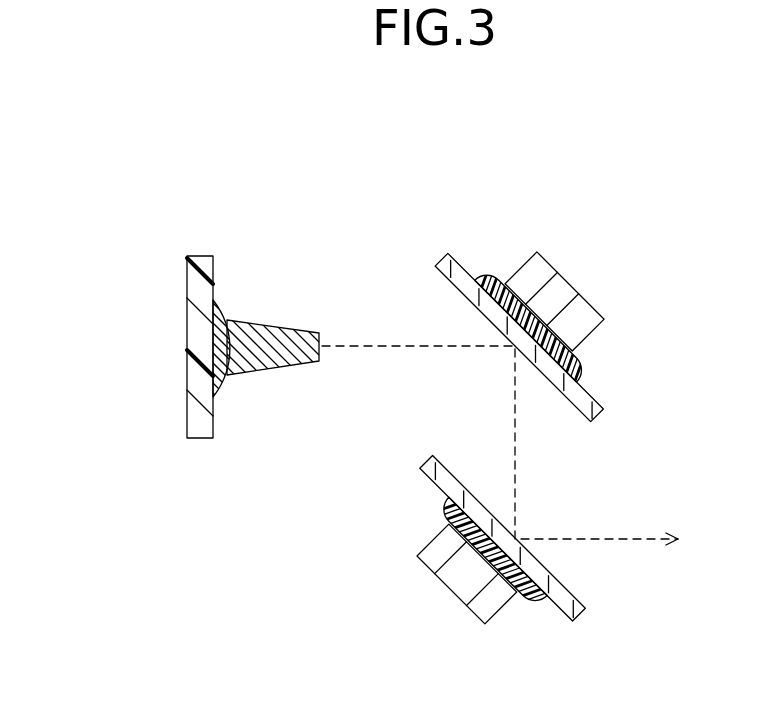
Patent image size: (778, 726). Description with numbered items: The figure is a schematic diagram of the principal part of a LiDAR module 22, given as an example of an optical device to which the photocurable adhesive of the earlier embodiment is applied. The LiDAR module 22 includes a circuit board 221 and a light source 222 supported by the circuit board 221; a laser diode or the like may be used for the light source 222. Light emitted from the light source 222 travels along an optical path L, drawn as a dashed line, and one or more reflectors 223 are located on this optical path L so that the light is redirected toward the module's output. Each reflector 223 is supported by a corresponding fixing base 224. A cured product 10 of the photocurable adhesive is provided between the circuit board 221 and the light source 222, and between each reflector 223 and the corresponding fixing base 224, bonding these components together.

The cured product 10 is at (218, 297).
The LiDAR module 22 is at (567, 203).
The circuit board 221 is at (203, 297).
The light source 222 is at (273, 337).
The reflector 223 is at (590, 384).
The fixing base 224 is at (565, 314).
The optical path L is at (600, 538).